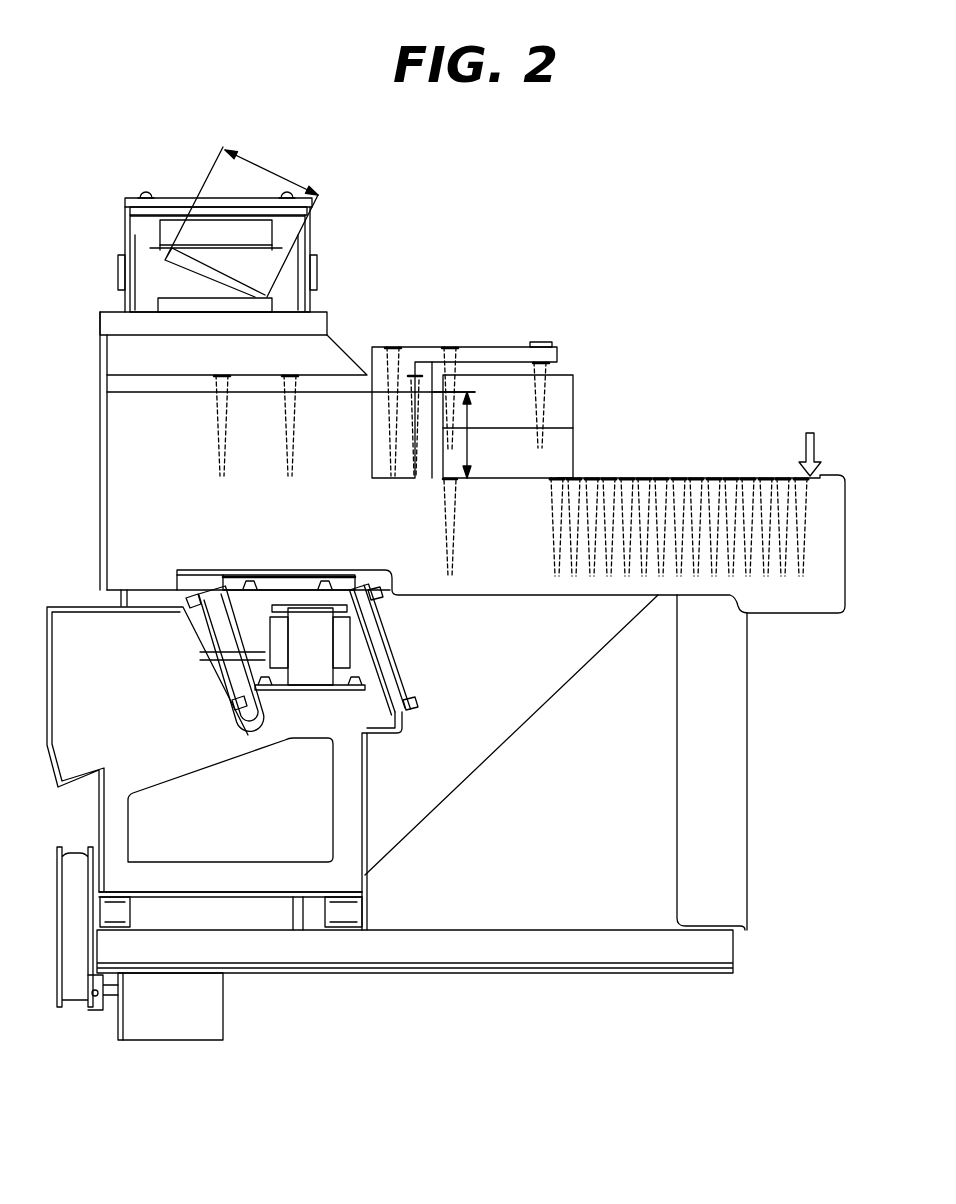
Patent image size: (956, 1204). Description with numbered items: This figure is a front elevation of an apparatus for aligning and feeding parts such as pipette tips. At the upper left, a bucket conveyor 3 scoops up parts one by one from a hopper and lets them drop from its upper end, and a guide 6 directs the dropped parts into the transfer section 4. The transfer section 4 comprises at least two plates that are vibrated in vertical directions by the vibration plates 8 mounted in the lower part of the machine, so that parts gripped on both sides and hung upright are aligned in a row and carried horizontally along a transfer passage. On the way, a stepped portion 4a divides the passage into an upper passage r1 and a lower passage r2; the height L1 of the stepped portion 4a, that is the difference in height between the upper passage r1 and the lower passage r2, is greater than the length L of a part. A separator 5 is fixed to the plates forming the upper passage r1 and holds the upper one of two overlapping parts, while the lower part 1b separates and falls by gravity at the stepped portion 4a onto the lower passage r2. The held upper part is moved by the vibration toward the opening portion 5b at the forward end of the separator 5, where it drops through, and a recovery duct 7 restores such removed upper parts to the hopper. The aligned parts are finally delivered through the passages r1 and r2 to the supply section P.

The lower part 1b is at (397, 345).
The bucket conveyor 3 is at (318, 238).
The transfer section 4 is at (130, 458).
The stepped portion 4a is at (432, 438).
The separator 5 is at (428, 347).
The opening portion 5b is at (553, 344).
The guide 6 is at (123, 323).
The recovery duct 7 is at (558, 380).
The vibration plates 8 is at (258, 866).
The length of the parts L is at (271, 170).
The height of the stepped portion L1 is at (469, 435).
The upper passage r1 is at (336, 340).
The lower passage r2 is at (527, 478).
The supply section P is at (811, 441).